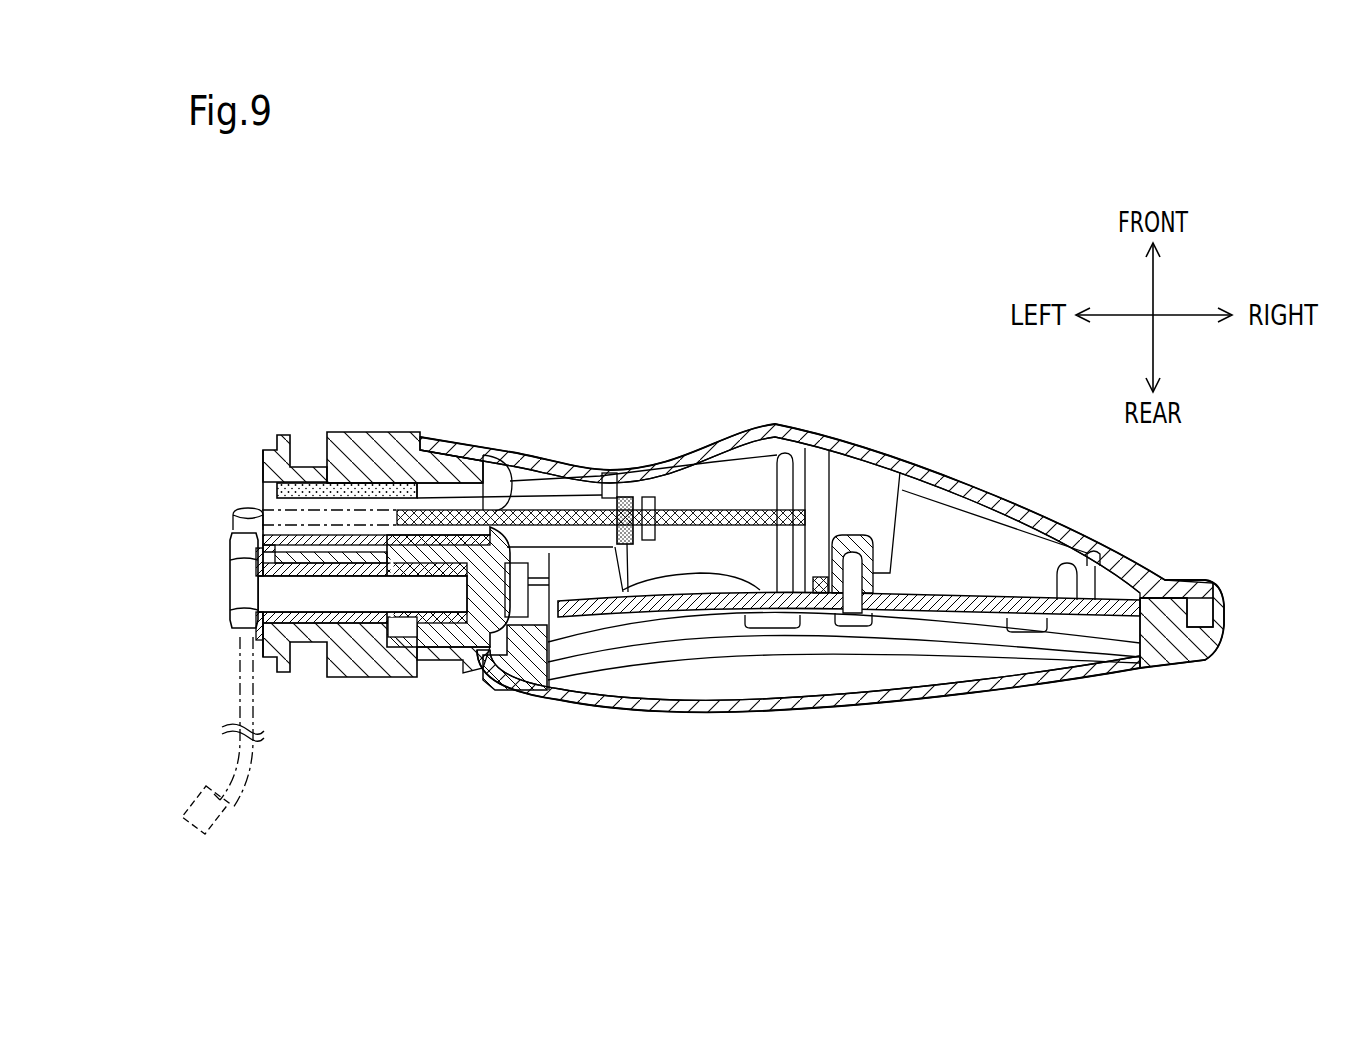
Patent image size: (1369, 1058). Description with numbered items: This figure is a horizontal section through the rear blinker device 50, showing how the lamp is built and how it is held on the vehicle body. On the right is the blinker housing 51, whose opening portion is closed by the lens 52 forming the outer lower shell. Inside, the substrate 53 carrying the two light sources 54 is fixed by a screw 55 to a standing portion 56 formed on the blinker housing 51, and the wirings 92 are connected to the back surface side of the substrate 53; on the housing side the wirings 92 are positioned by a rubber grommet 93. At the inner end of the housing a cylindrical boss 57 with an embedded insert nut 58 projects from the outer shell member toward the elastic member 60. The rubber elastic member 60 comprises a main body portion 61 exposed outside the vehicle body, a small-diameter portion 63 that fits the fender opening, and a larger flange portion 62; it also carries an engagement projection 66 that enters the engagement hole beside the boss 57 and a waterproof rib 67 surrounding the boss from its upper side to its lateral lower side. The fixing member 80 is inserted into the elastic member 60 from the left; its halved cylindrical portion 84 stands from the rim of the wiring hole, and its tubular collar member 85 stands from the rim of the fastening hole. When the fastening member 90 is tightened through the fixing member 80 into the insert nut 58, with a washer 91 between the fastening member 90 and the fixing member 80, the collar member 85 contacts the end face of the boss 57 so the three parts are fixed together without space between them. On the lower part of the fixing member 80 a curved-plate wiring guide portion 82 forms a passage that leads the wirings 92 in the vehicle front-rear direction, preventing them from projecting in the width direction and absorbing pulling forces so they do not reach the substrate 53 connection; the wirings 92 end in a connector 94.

The blinker device 50 is at (581, 290).
The blinker housing 51 is at (763, 432).
The lens 52 is at (660, 705).
The substrate 53 is at (930, 616).
The light source 54 is at (760, 622).
The screw 55 is at (853, 622).
The standing portion 56 is at (863, 513).
The boss 57 is at (472, 500).
The insert nut 58 is at (516, 665).
The elastic member 60 is at (396, 419).
The main body portion 61 is at (408, 440).
The flange portion 62 is at (285, 447).
The small-diameter portion 63 is at (316, 668).
The engagement projection 66 is at (440, 463).
The waterproof rib 67 is at (440, 652).
The fixing member 80 is at (247, 479).
The wiring guide portion 82 is at (244, 522).
The halved cylindrical portion 84 is at (340, 487).
The collar member 85 is at (338, 622).
The fastening member 90 is at (245, 595).
The washer 91 is at (256, 630).
The wirings 92 is at (548, 514).
The grommet 93 is at (625, 497).
The connector 94 is at (220, 822).